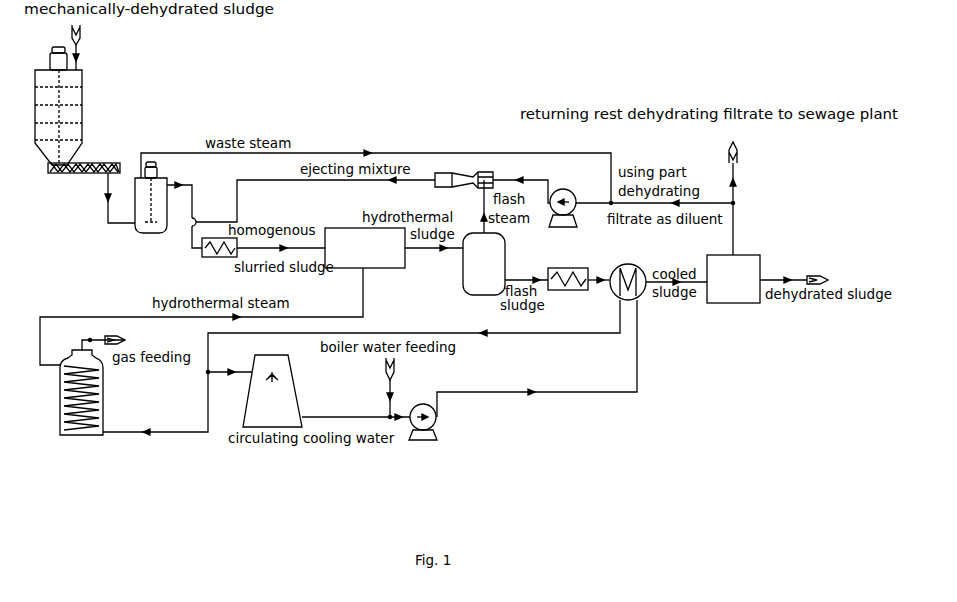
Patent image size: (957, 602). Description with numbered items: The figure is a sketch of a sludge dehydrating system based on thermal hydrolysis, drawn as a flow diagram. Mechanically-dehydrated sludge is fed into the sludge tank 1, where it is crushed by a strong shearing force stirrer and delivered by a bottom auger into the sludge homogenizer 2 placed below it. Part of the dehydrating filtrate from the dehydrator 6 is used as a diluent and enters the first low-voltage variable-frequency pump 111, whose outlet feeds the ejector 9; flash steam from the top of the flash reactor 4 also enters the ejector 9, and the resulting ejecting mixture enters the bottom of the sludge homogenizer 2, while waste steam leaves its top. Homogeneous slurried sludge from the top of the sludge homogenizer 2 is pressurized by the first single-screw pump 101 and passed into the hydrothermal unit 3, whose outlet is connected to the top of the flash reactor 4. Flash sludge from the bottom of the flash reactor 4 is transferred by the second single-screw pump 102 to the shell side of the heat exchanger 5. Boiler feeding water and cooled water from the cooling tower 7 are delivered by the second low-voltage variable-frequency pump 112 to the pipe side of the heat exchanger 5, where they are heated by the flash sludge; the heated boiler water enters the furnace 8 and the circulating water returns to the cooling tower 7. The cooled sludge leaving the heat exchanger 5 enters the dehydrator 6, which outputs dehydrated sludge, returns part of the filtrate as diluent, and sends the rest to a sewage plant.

The sludge tank 1 is at (77, 120).
The sludge homogenizer 2 is at (151, 207).
The hydrothermal unit 3 is at (365, 248).
The flash reactor 4 is at (484, 264).
The heat exchanger 5 is at (628, 290).
The dehydrator 6 is at (733, 279).
The cooling tower 7 is at (272, 391).
The furnace 8 is at (81, 402).
The ejector 9 is at (464, 186).
The first single-screw pump 101 is at (219, 258).
The second single-screw pump 102 is at (568, 289).
The first low-voltage variable-frequency pump 111 is at (563, 219).
The second low-voltage variable-frequency pump 112 is at (424, 432).